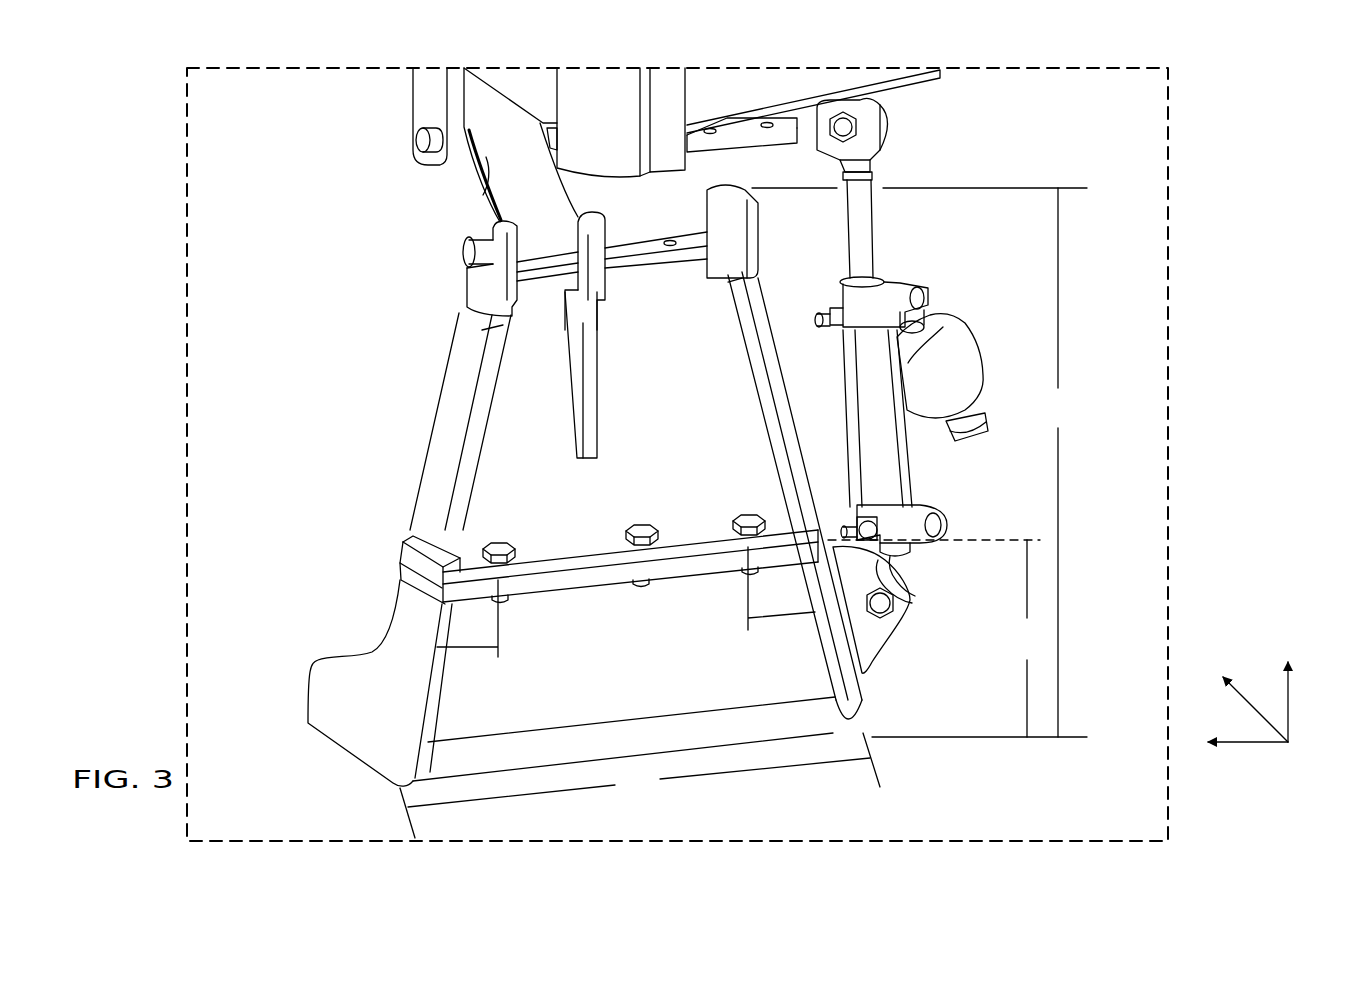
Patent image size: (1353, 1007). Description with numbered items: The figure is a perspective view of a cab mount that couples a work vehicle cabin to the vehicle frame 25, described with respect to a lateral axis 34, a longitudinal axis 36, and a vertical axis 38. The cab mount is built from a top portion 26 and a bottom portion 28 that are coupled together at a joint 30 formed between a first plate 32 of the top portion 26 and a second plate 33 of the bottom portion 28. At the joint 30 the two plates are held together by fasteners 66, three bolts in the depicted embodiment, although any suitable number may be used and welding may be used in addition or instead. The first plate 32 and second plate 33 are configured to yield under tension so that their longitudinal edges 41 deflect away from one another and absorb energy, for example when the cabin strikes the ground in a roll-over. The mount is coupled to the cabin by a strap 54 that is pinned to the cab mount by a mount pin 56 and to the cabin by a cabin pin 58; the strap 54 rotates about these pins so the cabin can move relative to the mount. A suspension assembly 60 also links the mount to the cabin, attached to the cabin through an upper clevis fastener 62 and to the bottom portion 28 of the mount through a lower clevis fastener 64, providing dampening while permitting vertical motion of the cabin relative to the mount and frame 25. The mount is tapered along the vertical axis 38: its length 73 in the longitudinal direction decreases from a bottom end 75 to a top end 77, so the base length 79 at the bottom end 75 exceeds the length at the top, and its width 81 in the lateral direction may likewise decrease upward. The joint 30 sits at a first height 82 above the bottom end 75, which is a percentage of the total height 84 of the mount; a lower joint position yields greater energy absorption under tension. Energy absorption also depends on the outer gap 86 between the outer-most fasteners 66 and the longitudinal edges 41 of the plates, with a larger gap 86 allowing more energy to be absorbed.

The frame 25 is at (233, 700).
The top portion 26 is at (671, 411).
The bottom portion 28 is at (666, 666).
The joint 30 is at (699, 546).
The first plate 32 is at (630, 550).
The second plate 33 is at (602, 585).
The lateral axis 34 is at (1258, 708).
The longitudinal axis 36 is at (1250, 742).
The vertical axis 38 is at (1290, 707).
The longitudinal edges 41 is at (400, 560).
The strap 54 is at (482, 193).
The mount pin 56 is at (462, 249).
The cabin pin 58 is at (420, 140).
The suspension assembly 60 is at (960, 305).
The fastener 62 is at (885, 125).
The fastener 64 is at (910, 608).
The fasteners 66 is at (642, 526).
The length 73 is at (757, 449).
The bottom end 75 is at (608, 803).
The top end 77 is at (670, 235).
The base length 79 is at (640, 785).
The width 81 is at (503, 445).
The first height 82 is at (935, 638).
The total height 84 is at (919, 462).
The outer gap 86 is at (470, 650).